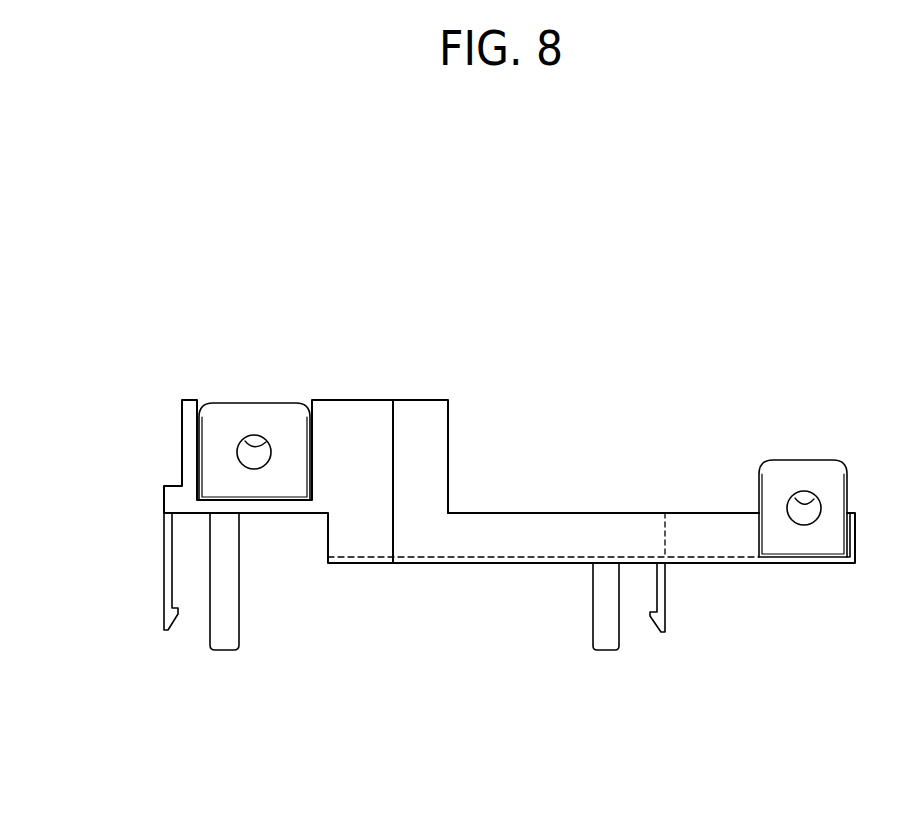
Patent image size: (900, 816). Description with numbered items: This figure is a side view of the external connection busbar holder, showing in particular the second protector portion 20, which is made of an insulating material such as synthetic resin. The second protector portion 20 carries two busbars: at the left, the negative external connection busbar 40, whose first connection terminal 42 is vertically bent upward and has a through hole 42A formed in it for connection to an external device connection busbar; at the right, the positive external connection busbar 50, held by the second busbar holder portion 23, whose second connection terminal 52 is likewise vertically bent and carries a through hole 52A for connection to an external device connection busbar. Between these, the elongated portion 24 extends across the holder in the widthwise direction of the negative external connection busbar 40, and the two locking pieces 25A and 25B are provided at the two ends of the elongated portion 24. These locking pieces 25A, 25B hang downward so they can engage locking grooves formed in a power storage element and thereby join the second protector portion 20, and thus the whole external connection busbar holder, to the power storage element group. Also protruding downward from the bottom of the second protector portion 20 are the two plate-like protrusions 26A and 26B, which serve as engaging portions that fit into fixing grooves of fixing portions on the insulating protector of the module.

The second protector portion 20 is at (432, 396).
The second busbar holder portion 23 is at (811, 564).
The elongated portion 24 is at (573, 512).
The locking piece 25A is at (668, 577).
The locking piece 25B is at (162, 540).
The protrusion 26A is at (620, 633).
The protrusion 26B is at (240, 634).
The negative external connection busbar 40 is at (285, 404).
The first connection terminal 42 is at (229, 418).
The through hole 42A is at (267, 441).
The positive external connection busbar 50 is at (822, 457).
The second connection terminal 52 is at (787, 478).
The through hole 52A is at (813, 498).